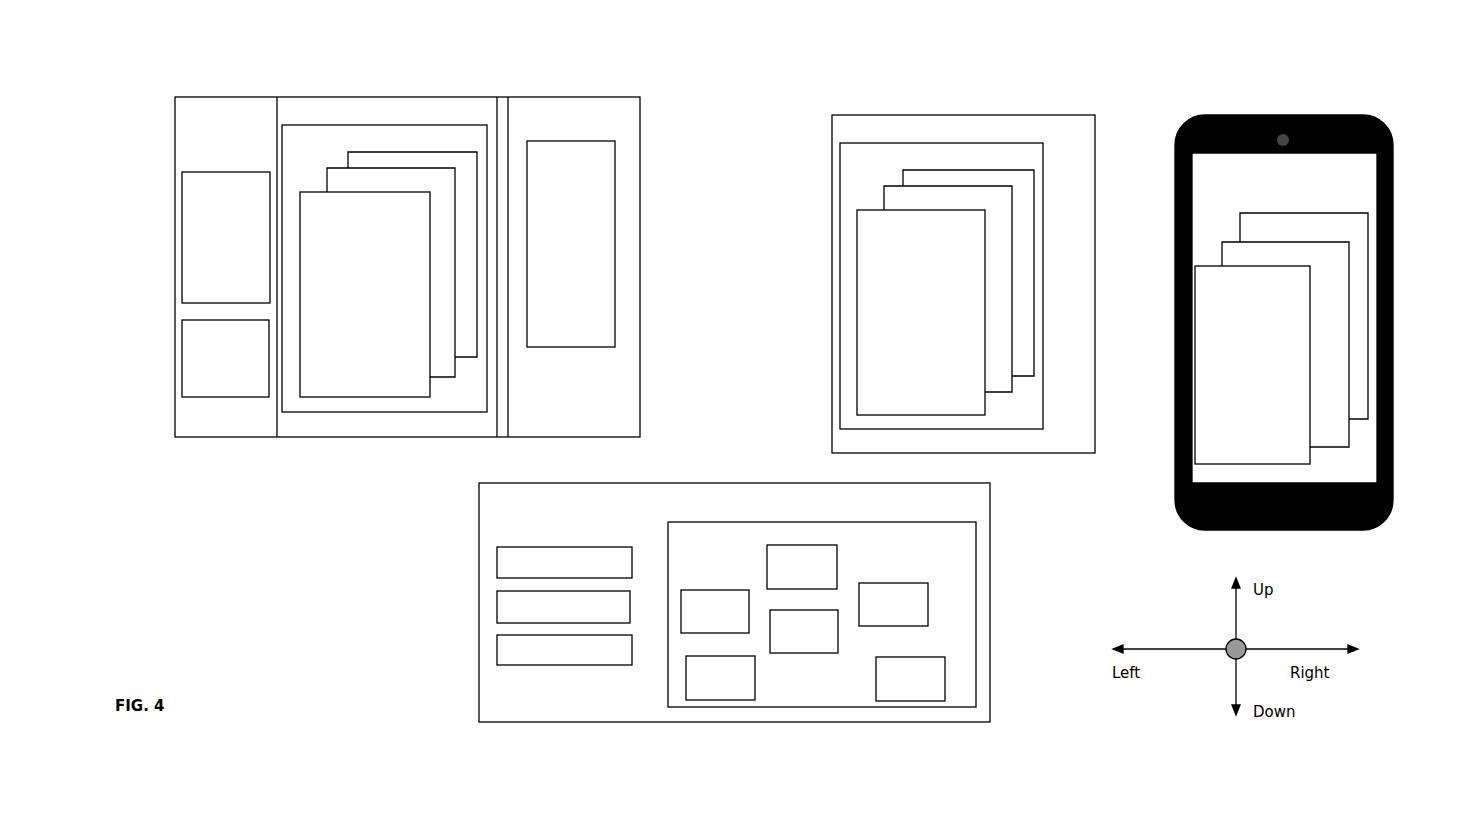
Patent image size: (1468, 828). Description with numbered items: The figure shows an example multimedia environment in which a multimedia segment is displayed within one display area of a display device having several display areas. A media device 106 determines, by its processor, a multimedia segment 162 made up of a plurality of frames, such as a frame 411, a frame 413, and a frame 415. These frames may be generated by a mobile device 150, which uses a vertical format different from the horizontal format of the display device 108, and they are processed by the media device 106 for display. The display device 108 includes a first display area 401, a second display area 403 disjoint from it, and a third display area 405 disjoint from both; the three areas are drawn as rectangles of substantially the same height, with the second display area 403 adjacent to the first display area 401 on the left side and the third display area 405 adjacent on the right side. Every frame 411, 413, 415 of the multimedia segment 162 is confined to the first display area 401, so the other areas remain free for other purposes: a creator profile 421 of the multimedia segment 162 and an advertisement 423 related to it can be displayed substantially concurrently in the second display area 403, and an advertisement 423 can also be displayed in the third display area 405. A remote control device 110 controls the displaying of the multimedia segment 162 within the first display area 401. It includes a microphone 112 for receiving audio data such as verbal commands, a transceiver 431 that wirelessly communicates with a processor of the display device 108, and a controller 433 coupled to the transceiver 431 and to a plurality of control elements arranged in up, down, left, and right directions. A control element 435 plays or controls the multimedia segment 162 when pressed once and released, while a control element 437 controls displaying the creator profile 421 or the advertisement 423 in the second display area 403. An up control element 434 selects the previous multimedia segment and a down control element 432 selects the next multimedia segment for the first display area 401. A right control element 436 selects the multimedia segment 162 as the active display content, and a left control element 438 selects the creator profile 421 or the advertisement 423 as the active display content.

The display device 108 is at (175, 97).
The media device 106 is at (1000, 114).
The mobile device 150 is at (1393, 130).
The remote control device 110 is at (479, 520).
The microphone 112 is at (497, 648).
The multimedia segment 162 is at (430, 123).
The first display area 401 is at (298, 423).
The second display area 403 is at (183, 422).
The third display area 405 is at (627, 368).
The frame 411 is at (805, 328).
The frame 413 is at (328, 168).
The frame 415 is at (358, 152).
The creator profile 421 is at (202, 267).
The advertisement 423 is at (200, 372).
The transceiver 431 is at (497, 603).
The control element 432 is at (804, 631).
The controller 433 is at (497, 557).
The up control element 434 is at (802, 567).
The control element 435 is at (720, 678).
The third control element 436 is at (893, 604).
The control element 437 is at (910, 679).
The fourth control element 438 is at (715, 611).